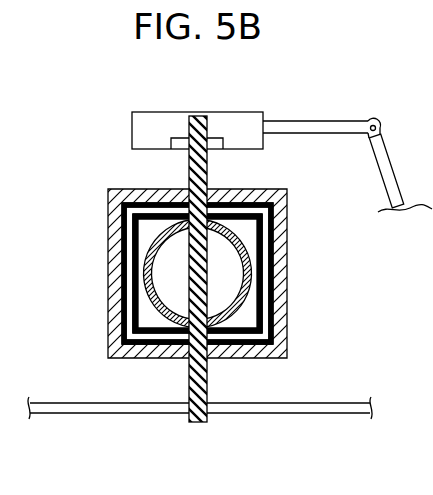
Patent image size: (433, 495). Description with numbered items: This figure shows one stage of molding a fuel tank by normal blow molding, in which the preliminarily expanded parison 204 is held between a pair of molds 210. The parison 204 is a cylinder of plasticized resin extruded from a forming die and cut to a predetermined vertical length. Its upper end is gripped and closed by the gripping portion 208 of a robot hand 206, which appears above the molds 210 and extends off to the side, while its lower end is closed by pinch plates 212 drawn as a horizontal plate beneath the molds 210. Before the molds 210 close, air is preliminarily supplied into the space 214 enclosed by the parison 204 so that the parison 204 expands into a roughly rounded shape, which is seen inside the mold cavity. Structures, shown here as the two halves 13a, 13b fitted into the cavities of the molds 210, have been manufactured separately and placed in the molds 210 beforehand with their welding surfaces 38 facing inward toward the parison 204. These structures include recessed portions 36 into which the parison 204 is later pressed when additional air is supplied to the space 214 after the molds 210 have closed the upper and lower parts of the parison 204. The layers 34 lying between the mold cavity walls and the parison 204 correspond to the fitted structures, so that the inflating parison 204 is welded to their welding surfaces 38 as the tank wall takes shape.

The gripping portion 208 is at (222, 112).
The robot hand 206 is at (344, 122).
The molds 210 is at (283, 208).
The parison 204 is at (281, 251).
The first sensor element 13a is at (120, 237).
The second sensor element 13b is at (276, 263).
The space 214 is at (282, 317).
The electrode 34 is at (114, 322).
The recessed portions 36 is at (150, 358).
The welding surfaces 38 is at (128, 262).
The pinch plates 212 is at (78, 414).